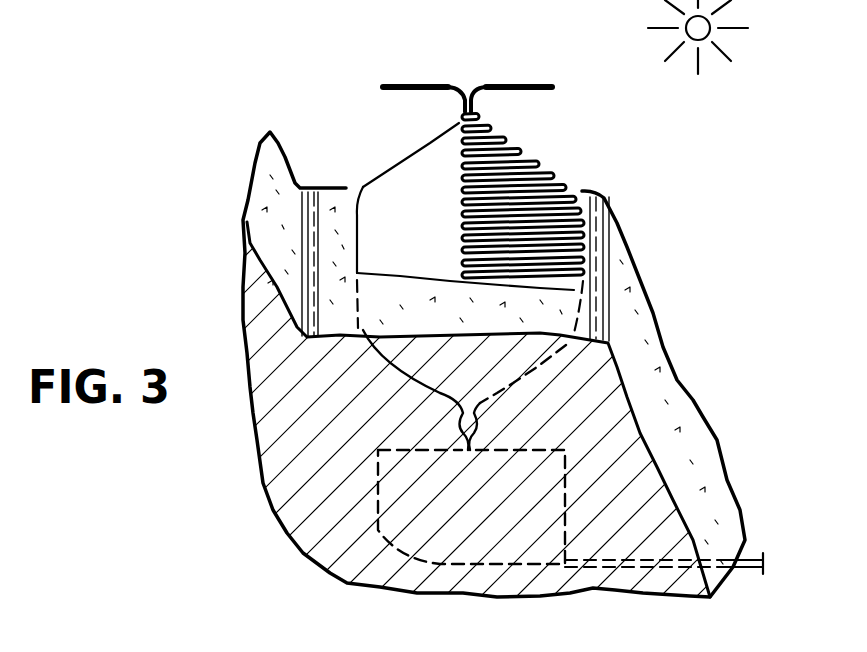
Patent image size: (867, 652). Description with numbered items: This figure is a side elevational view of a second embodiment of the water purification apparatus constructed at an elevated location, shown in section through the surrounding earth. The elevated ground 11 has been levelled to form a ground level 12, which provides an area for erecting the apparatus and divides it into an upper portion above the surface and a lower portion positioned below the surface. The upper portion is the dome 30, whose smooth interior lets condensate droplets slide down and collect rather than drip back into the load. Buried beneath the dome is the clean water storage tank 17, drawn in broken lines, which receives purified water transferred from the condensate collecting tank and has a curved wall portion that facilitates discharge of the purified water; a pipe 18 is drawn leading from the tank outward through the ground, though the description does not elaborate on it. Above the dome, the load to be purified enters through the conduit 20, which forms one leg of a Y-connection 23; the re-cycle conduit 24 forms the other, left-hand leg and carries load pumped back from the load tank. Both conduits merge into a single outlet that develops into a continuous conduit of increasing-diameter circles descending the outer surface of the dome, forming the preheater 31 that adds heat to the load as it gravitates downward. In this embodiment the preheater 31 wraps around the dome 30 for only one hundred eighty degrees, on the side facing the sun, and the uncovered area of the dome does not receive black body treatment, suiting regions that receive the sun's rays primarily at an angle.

The elevated ground 11 is at (258, 317).
The ground level 12 is at (351, 326).
The clean water storage tank 17 is at (378, 497).
The outlet pipe 18 is at (748, 556).
The conduit 20 is at (518, 82).
The Y-connection 23 is at (466, 82).
The re-cycle conduit 24 is at (420, 82).
The dome 30 is at (348, 190).
The preheater 31 is at (552, 148).